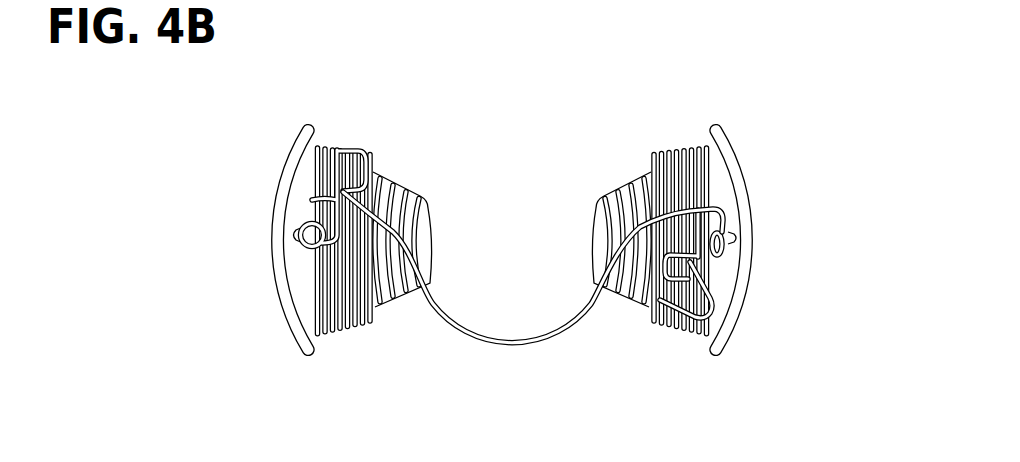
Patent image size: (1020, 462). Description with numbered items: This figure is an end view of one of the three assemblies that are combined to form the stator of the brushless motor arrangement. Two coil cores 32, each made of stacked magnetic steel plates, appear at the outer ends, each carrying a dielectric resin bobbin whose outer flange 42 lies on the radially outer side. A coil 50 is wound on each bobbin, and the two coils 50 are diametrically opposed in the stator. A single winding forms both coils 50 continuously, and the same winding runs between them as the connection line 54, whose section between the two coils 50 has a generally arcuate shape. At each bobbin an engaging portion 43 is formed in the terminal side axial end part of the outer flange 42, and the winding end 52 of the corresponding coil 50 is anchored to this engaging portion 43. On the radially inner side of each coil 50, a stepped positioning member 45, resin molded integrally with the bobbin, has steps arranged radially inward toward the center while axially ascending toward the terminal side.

The coil core 32 is at (297, 323).
The outer flange 42 is at (305, 172).
The engaging portion 43 is at (293, 236).
The stepped positioning member 45 is at (427, 223).
The coil 50 is at (348, 320).
The winding end 52 is at (347, 161).
The connection line 54 is at (507, 340).